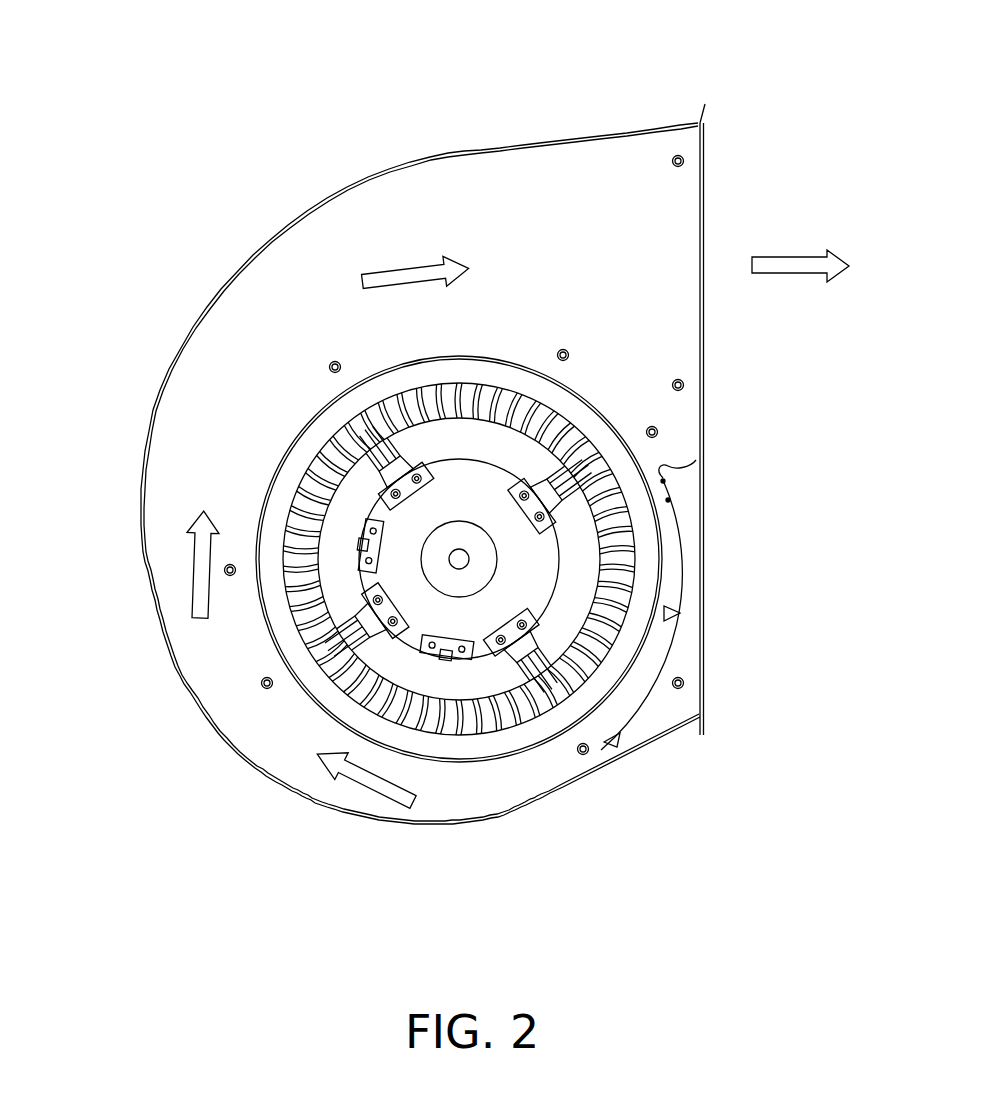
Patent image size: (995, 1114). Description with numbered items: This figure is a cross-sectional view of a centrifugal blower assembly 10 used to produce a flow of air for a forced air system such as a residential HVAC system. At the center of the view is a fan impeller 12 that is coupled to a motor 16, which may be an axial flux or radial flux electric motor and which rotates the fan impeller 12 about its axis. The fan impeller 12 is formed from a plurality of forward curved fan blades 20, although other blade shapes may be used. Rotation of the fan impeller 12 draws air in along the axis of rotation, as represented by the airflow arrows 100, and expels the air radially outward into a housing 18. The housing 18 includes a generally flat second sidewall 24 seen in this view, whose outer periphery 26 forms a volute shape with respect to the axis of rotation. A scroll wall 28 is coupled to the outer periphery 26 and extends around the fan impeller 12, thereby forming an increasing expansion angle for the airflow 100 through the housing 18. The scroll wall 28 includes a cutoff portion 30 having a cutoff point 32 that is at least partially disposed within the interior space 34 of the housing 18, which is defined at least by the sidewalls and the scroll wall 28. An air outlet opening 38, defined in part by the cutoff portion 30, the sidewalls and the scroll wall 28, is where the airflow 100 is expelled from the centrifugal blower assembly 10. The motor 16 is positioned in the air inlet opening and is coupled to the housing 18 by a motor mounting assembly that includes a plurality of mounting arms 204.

The centrifugal blower assembly 10 is at (212, 79).
The fan impeller 12 is at (294, 532).
The motor 16 is at (484, 652).
The housing 18 is at (348, 187).
The forward curved fan blades 20 is at (287, 478).
The second sidewall 24 is at (455, 178).
The outer periphery 26 is at (175, 666).
The scroll wall 28 is at (433, 824).
The cutoff portion 30 is at (683, 573).
The cutoff point 32 is at (663, 478).
The interior space 34 is at (294, 269).
The air outlet opening 38 is at (704, 208).
The airflow arrows 100 is at (401, 262).
The mounting arms 204 is at (553, 645).